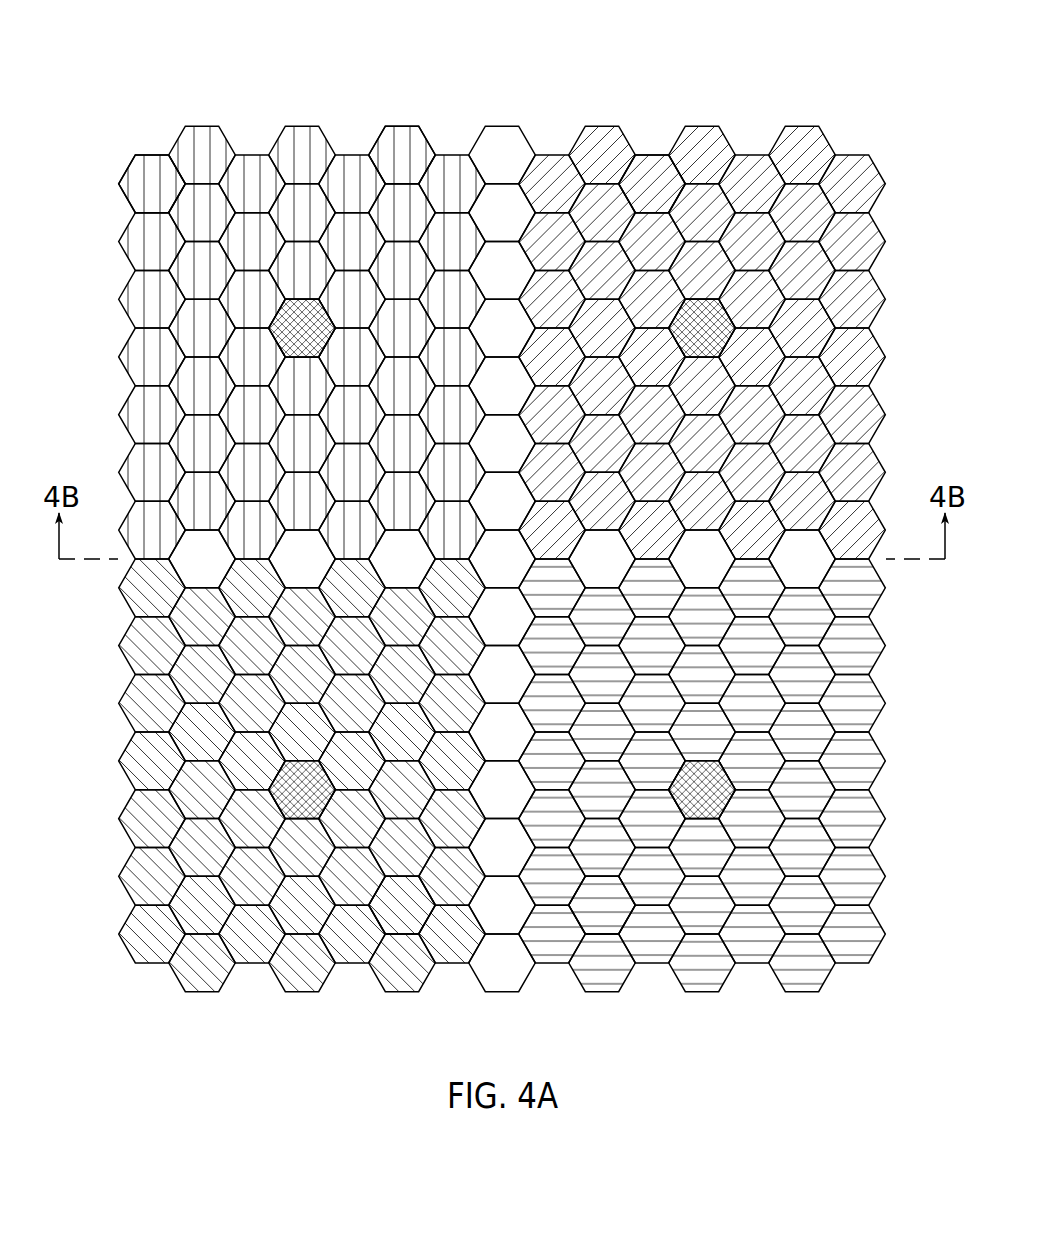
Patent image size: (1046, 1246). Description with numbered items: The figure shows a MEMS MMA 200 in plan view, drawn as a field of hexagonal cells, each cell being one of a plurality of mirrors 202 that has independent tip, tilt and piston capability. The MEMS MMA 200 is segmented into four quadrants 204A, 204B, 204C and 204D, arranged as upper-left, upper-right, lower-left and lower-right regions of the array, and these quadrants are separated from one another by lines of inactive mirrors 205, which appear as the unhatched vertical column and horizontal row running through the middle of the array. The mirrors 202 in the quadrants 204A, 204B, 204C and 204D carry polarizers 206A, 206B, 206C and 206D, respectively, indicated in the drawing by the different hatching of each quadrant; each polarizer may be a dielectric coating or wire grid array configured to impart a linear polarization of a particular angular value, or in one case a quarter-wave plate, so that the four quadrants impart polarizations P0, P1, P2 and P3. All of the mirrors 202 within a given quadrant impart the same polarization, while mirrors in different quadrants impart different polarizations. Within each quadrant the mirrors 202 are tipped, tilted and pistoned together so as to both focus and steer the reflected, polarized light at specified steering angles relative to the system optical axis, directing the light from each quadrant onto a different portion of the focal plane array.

The MEMS MMA 200 is at (482, 527).
The mirror 202 is at (117, 158).
The quadrant 204A is at (266, 318).
The quadrant 204B is at (702, 322).
The quadrant 204C is at (303, 800).
The quadrant 204D is at (702, 800).
The lines of inactive mirrors 205 is at (503, 114).
The polarizer 206A is at (400, 150).
The polarizer 206B is at (640, 178).
The polarizer 206C is at (415, 905).
The polarizer 206D is at (615, 905).